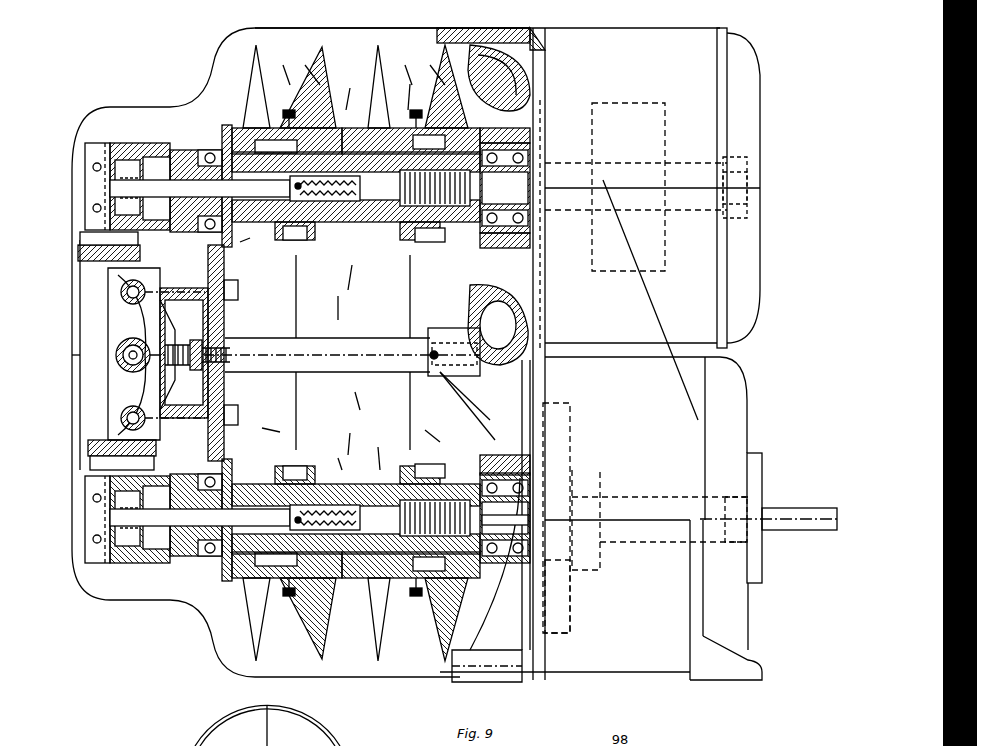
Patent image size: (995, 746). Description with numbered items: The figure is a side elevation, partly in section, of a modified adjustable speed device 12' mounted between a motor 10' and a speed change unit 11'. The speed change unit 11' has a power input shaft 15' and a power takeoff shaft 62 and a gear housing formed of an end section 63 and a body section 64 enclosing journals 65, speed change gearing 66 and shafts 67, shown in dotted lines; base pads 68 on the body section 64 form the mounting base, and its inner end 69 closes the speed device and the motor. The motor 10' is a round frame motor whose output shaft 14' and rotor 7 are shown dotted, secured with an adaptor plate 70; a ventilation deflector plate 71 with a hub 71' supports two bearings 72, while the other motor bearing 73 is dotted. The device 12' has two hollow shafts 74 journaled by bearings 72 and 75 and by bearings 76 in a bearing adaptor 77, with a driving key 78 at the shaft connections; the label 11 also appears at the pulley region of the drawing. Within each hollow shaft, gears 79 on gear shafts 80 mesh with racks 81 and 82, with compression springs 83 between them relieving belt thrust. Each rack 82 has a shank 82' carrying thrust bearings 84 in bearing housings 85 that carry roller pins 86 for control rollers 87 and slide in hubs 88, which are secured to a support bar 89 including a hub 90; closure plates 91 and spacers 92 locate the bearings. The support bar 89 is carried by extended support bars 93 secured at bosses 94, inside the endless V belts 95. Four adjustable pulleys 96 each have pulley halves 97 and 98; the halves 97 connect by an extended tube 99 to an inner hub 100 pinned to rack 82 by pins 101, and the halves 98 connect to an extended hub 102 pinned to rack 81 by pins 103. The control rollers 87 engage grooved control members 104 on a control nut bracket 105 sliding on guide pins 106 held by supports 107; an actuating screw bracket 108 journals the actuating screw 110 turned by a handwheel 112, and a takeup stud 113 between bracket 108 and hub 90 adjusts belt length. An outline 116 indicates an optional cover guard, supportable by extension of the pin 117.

The motor rotor 7 is at (668, 133).
The motor 10' is at (652, 180).
The pulley flange 11 is at (337, 302).
The speed change unit 11' is at (662, 435).
The adjustable speed device 12' is at (342, 497).
The motor power output shaft 14' is at (548, 354).
The power input shaft 15' is at (495, 534).
The power takeoff shaft 62 is at (785, 508).
The end section 63 is at (745, 432).
The body section 64 is at (615, 665).
The journals 65 is at (600, 562).
The speed change gearing 66 is at (568, 595).
The shafts 67 is at (575, 460).
The base pads 68 is at (496, 682).
The inner end 69 is at (492, 415).
The adaptor plate 70 is at (530, 27).
The ventilation deflector plate 71 is at (499, 177).
The hub 71' is at (498, 316).
The bearings 72 is at (498, 150).
The motor shaft support bearing 73 is at (745, 155).
The hollow shaft 74 is at (346, 334).
The bearing 75 is at (210, 150).
The bearing 76 is at (490, 466).
The bearing adaptor 77 is at (490, 592).
The driving key 78 is at (495, 306).
The gears 79 is at (348, 354).
The gear shafts 80 is at (331, 458).
The rack 81 is at (396, 270).
The rack 82 is at (357, 231).
The shank 82' is at (200, 188).
The compression springs 83 is at (256, 128).
The thrust bearings 84 is at (127, 165).
The bearing housings 85 is at (148, 160).
The roller pins 86 is at (97, 143).
The control rollers 87 is at (140, 250).
The hubs 88 is at (172, 150).
The support bar 89 is at (237, 235).
The hub 90 is at (224, 393).
The closure plates 91 is at (228, 125).
The spacers 92 is at (175, 107).
The extended support bars 93 is at (360, 330).
The bosses 94 is at (460, 380).
The endless V belts 95 is at (352, 352).
The adjustable effective diameter pulleys 96 is at (355, 80).
The pulley half 97 is at (328, 241).
The pulley half 98 is at (379, 249).
The extended tube 99 is at (289, 110).
The inner hub 100 is at (276, 146).
The pins 101 is at (290, 188).
The extended hub 102 is at (430, 235).
The pins 103 is at (429, 142).
The control members 104 is at (118, 418).
The control nut bracket 105 is at (120, 323).
The guide pins 106 is at (120, 300).
The supports 107 is at (182, 292).
The actuating screw bracket 108 is at (160, 385).
The actuating screw 110 is at (116, 347).
The handwheel 112 is at (64, 357).
The takeup stud 113 is at (198, 340).
The two piece cover guard 116 is at (378, 26).
The pin 117 is at (430, 355).